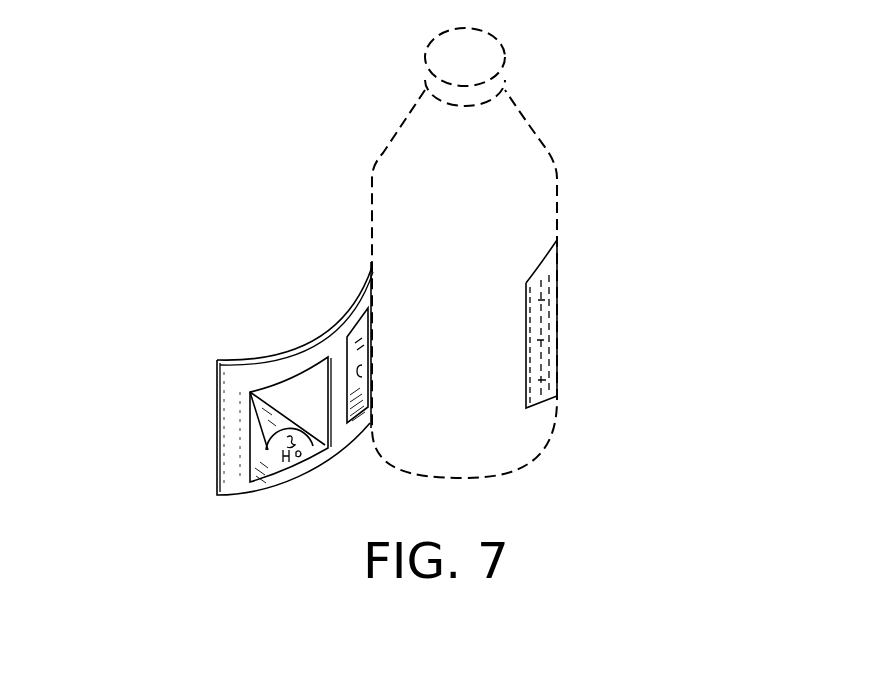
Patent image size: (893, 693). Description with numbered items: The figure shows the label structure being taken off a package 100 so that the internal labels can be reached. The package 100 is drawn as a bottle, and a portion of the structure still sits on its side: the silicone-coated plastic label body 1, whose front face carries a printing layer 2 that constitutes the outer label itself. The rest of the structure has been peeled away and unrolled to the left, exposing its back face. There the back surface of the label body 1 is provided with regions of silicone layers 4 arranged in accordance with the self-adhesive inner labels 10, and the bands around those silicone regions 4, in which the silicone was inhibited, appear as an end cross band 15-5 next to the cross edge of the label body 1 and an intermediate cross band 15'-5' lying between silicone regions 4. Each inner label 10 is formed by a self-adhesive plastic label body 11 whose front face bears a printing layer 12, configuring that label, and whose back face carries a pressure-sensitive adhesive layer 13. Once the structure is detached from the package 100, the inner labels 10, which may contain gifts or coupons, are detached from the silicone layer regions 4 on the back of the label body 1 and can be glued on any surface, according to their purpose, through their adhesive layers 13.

The package 100 is at (527, 207).
The silicone-coated plastic label body 1 is at (546, 292).
The printing layer 2 is at (543, 347).
The self-adhesive inner labels 10 is at (122, 342).
The self-adhesive plastic label body 11 is at (268, 442).
The printing layer 12 is at (263, 465).
The pressure-sensitive adhesive layer 13 is at (270, 407).
The silicone layer regions 4 is at (288, 397).
The end cross band 15-5 is at (233, 388).
The intermediate cross band 15'-5' is at (299, 253).